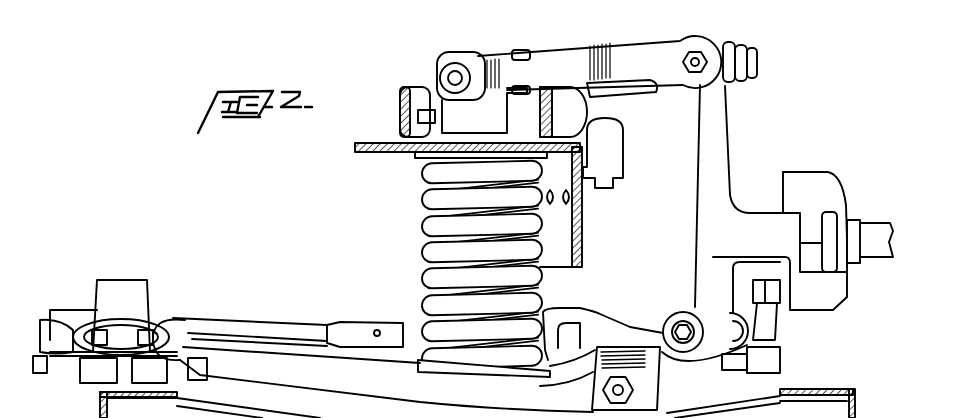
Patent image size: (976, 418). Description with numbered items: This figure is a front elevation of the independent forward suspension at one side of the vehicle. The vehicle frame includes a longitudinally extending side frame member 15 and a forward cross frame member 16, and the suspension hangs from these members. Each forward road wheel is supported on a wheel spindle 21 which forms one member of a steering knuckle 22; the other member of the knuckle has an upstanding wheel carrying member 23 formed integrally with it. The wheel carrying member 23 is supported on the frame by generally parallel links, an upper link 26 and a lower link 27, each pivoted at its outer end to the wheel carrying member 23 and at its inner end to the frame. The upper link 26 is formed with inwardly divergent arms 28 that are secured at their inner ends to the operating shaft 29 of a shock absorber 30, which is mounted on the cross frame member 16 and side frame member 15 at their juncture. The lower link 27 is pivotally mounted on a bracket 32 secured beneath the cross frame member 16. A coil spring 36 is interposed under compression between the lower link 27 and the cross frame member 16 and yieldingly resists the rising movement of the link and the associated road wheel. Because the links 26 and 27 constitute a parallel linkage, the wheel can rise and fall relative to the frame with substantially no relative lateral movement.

The side frame member 15 is at (583, 242).
The forward cross frame member 16 is at (357, 151).
The wheel spindle 21 is at (868, 228).
The steering knuckle 22 is at (807, 180).
The wheel carrying member 23 is at (735, 140).
The upper link 26 is at (598, 62).
The lower link 27 is at (301, 370).
The inwardly divergent arms 28 is at (508, 80).
The operating shaft 29 is at (452, 76).
The shock absorber 30 is at (491, 54).
The bracket 32 is at (117, 293).
The coil spring 36 is at (430, 253).